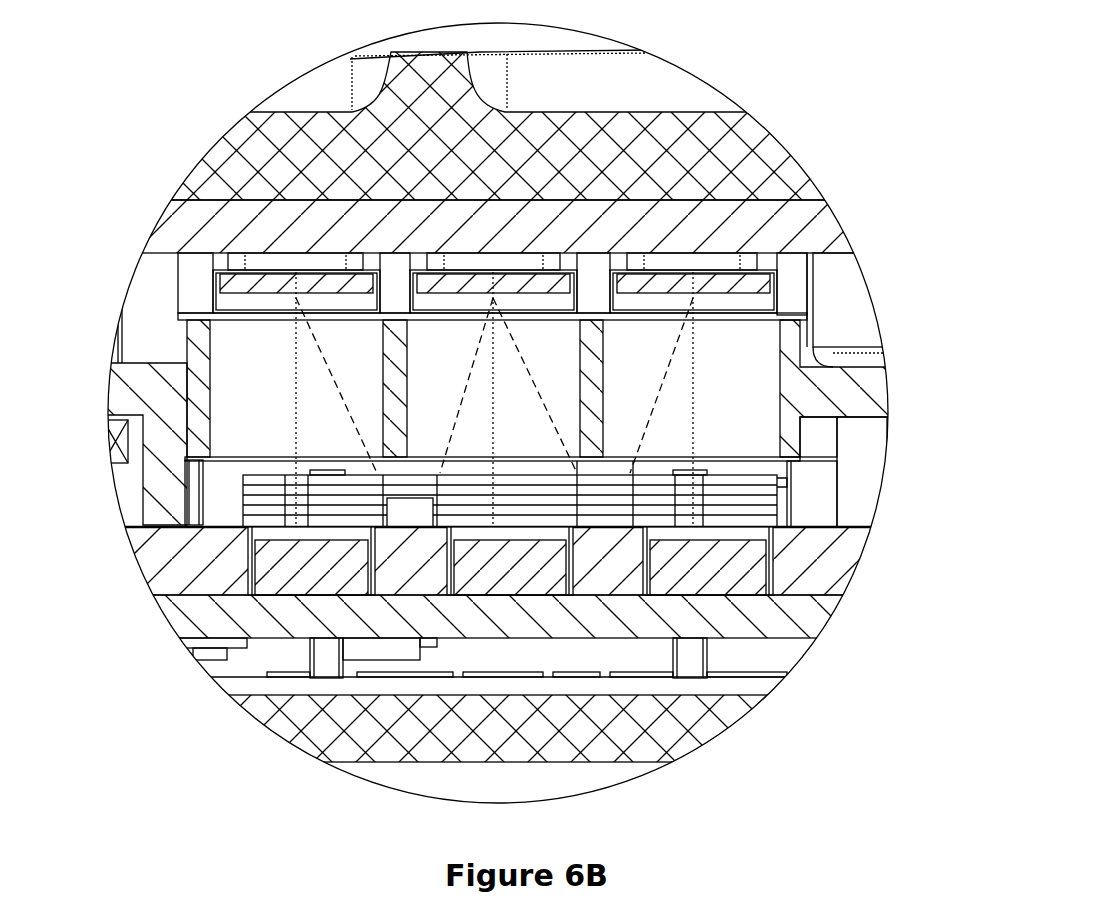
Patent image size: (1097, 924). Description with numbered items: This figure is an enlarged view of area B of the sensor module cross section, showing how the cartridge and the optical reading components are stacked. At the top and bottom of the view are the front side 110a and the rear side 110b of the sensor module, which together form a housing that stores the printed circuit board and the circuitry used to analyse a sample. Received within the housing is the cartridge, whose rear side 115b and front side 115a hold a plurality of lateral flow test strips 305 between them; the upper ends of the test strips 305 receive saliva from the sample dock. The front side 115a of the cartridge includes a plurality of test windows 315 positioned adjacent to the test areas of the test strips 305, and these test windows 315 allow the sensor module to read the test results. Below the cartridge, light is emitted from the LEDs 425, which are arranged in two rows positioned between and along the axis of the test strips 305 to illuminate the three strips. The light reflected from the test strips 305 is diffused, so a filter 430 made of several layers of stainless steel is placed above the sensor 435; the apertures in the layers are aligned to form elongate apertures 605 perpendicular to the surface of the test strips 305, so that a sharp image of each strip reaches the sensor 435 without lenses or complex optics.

The area B is at (668, 63).
The front side of sensor module 110a is at (230, 152).
The rear side of cartridge 115b is at (165, 226).
The lateral flow test strips 305 is at (263, 283).
The test windows 315 is at (240, 350).
The front side of cartridge 115a is at (145, 387).
The elongate apertures 605 is at (285, 490).
The sensor 435 is at (290, 565).
The LEDs 425 is at (400, 522).
The filter 430 is at (777, 528).
The rear side of sensor module 110b is at (272, 723).